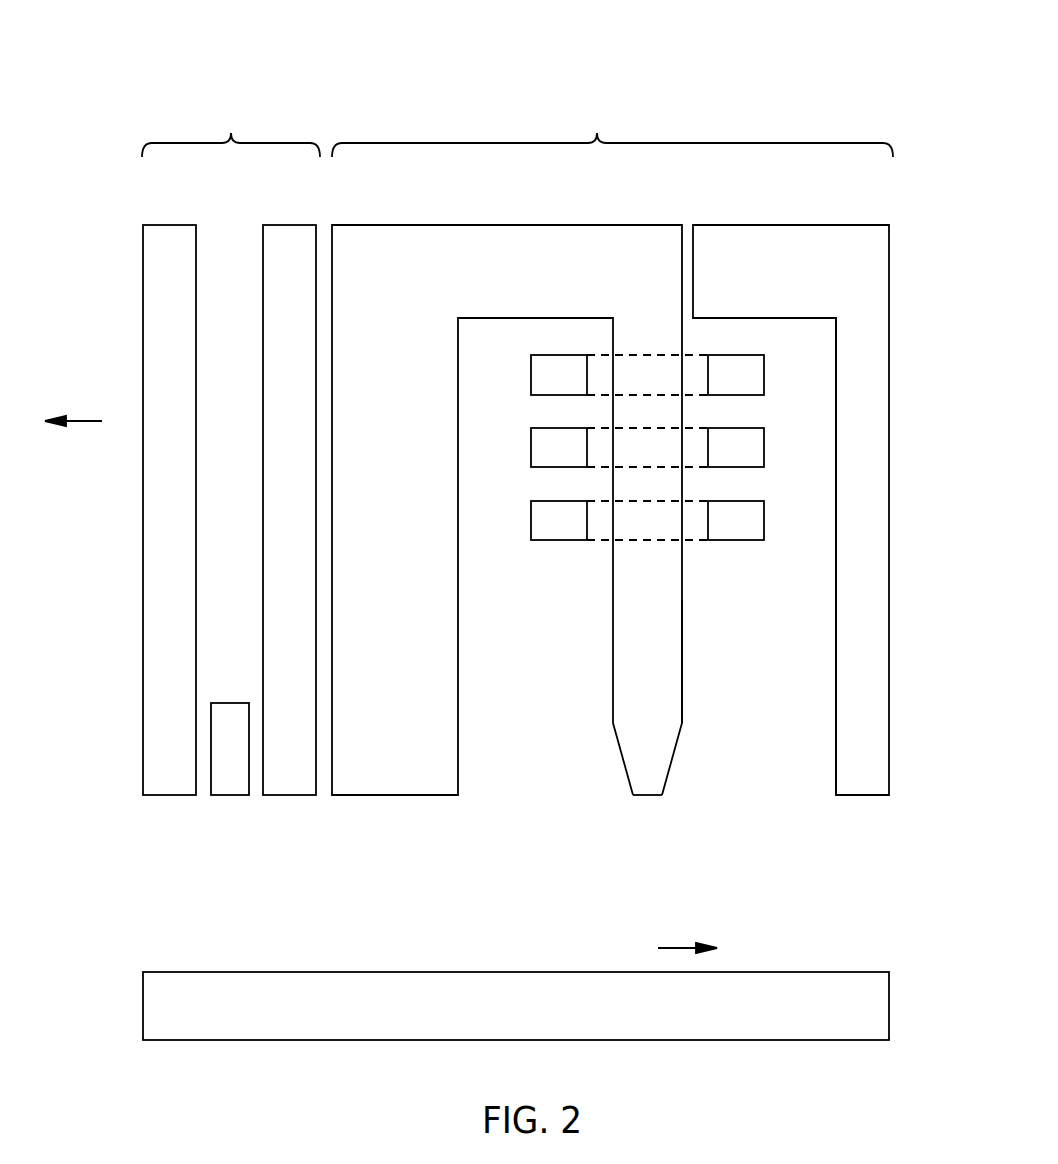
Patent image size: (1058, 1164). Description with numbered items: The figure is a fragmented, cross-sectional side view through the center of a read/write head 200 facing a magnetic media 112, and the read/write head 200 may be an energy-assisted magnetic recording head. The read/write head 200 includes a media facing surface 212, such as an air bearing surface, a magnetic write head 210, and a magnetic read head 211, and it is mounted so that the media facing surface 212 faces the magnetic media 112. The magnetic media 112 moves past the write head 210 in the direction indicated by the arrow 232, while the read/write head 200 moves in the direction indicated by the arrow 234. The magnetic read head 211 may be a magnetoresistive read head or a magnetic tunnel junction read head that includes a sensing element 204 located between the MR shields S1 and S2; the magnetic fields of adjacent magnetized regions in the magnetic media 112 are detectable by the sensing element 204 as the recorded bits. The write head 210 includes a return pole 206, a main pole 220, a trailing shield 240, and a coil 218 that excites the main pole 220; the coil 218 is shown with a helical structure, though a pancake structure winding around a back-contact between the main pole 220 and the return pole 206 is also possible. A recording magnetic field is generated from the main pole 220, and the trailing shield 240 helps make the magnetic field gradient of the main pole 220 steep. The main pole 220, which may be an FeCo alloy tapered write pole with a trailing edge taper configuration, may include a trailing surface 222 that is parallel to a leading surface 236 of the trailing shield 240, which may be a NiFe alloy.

The read/write head 200 is at (142, 50).
The magnetic read head 211 is at (231, 130).
The magnetic write head 210 is at (612, 130).
The MR shield S1 is at (165, 797).
The MR sensing element 204 is at (230, 797).
The MR shield S2 is at (292, 797).
The return pole 206 is at (397, 797).
The main pole 220 is at (622, 753).
The trailing surface 222 is at (682, 712).
The media facing surface 212 is at (648, 797).
The trailing shield 240 is at (889, 757).
The leading surface 236 is at (835, 624).
The coil 218 is at (558, 541).
The arrow 234 is at (84, 420).
The arrow 232 is at (674, 946).
The magnetic media 112 is at (889, 1003).